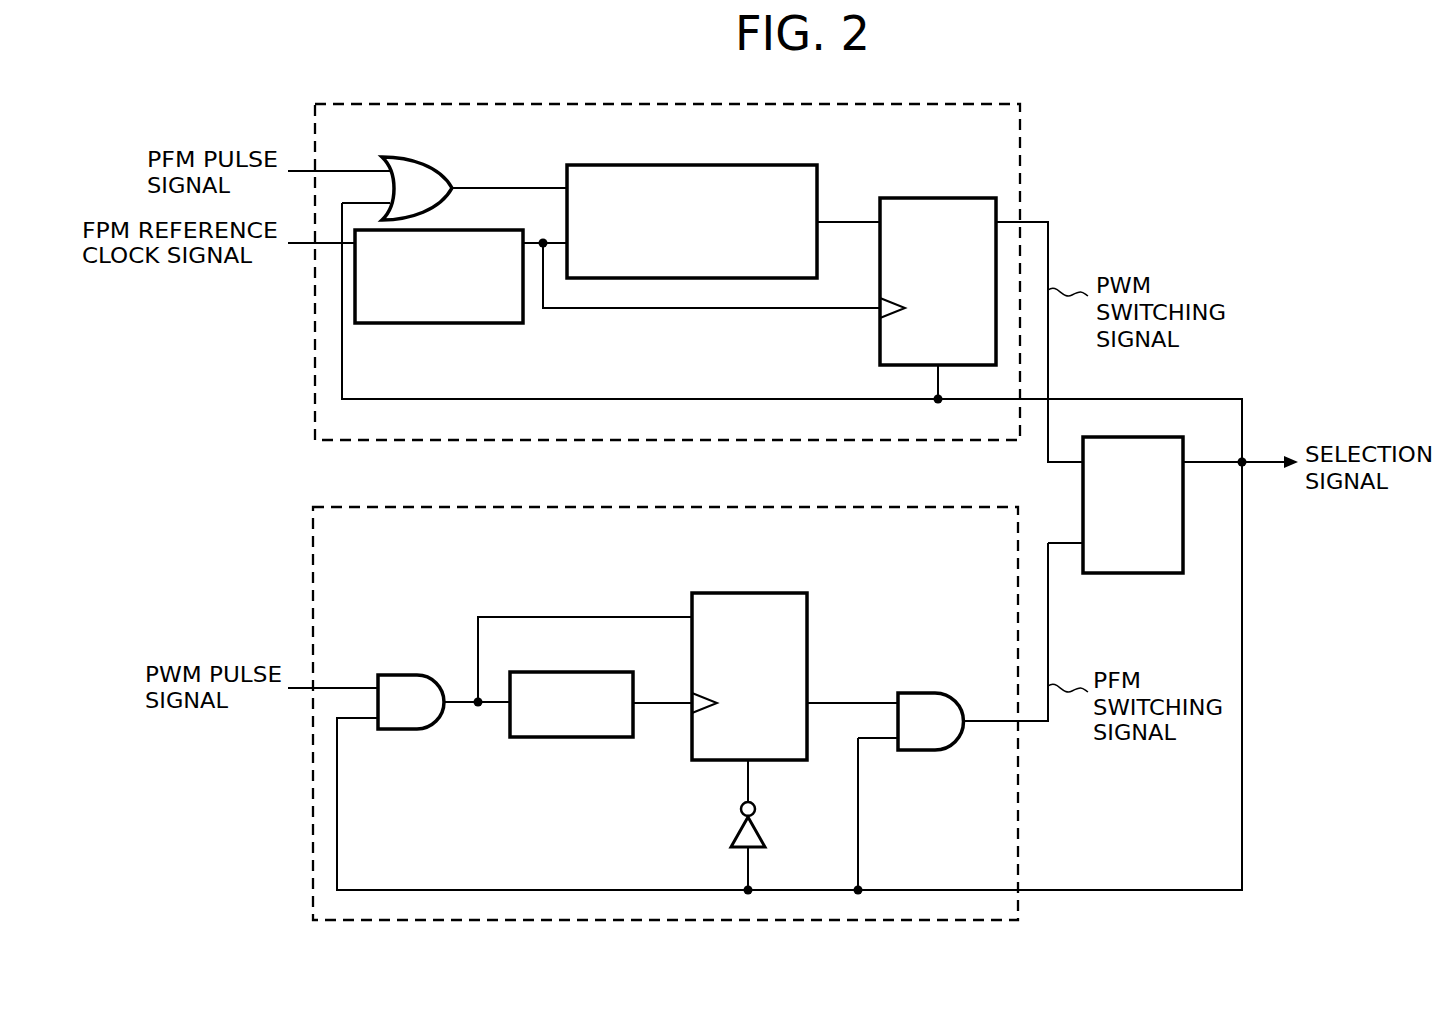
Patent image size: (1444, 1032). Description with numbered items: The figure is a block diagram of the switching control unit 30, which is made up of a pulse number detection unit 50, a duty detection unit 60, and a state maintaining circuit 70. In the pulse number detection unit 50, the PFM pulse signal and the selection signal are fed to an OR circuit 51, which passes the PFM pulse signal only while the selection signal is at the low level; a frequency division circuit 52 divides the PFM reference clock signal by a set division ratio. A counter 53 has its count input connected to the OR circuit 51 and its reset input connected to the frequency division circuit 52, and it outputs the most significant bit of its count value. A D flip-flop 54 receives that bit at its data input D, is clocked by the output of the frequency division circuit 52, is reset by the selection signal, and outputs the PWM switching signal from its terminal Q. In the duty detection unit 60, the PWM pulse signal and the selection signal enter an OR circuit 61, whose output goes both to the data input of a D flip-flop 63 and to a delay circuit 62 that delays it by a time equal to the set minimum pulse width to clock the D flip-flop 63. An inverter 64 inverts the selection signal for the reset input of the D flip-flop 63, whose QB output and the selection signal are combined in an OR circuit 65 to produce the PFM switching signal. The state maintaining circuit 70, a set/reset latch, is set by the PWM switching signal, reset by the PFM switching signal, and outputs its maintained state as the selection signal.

The switching control unit 30 is at (1212, 217).
The pulse number detection unit 50 is at (1020, 165).
The OR circuit 51 is at (432, 157).
The frequency division circuit 52 is at (466, 325).
The counter 53 is at (702, 165).
The D flip-flop 54 is at (938, 197).
The duty detection unit 60 is at (1018, 797).
The OR circuit 61 is at (405, 672).
The delay circuit 62 is at (568, 672).
The D flip-flop 63 is at (742, 593).
The inverter 64 is at (731, 840).
The OR circuit 65 is at (928, 692).
The state maintaining circuit 70 is at (1133, 575).